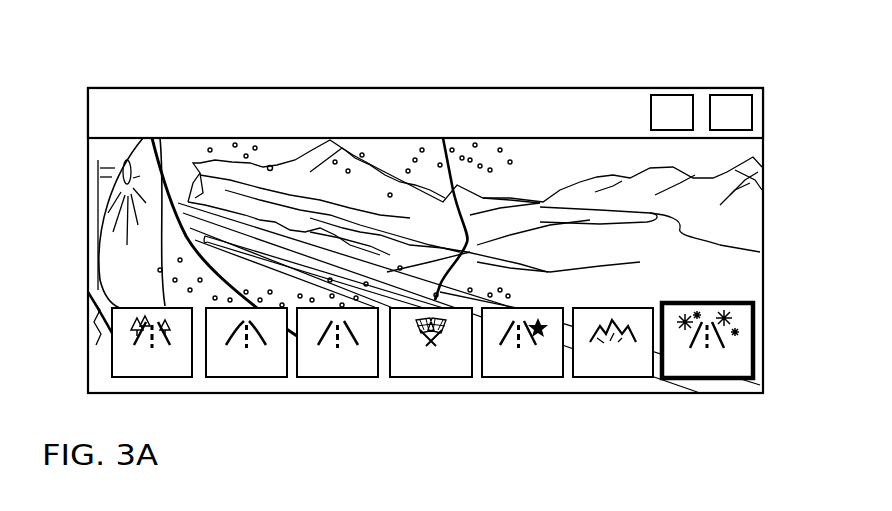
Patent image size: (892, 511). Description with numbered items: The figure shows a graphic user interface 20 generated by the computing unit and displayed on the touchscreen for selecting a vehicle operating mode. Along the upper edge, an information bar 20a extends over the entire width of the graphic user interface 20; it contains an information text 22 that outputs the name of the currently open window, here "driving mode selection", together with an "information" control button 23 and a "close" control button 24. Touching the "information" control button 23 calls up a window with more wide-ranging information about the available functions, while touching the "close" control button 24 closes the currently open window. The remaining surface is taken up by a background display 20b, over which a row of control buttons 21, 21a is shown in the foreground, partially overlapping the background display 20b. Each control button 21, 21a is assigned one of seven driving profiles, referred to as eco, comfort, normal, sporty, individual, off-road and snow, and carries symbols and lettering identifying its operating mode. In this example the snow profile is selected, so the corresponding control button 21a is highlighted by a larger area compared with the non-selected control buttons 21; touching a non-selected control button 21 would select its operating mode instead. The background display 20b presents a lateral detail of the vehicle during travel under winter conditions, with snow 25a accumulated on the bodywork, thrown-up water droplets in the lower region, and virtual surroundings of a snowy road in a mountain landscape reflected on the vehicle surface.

The graphic user interface 20 is at (233, 70).
The information bar 20a is at (628, 96).
The background display 20b is at (537, 155).
The control button 21 is at (147, 373).
The selected control button 21a is at (717, 372).
The information text 22 is at (480, 78).
The "information" control button 23 is at (689, 102).
The "close" control button 24 is at (749, 102).
The snow 25a is at (288, 176).